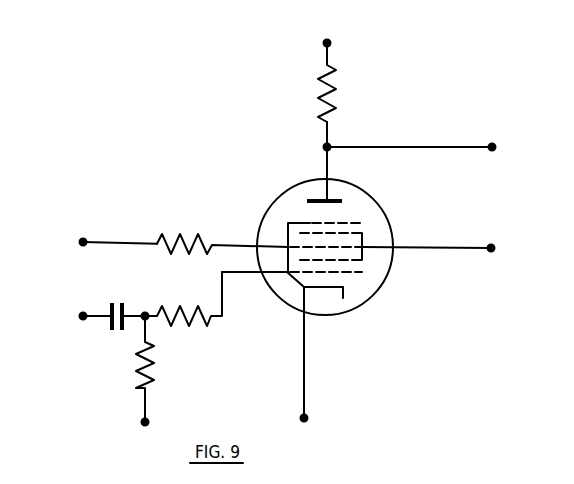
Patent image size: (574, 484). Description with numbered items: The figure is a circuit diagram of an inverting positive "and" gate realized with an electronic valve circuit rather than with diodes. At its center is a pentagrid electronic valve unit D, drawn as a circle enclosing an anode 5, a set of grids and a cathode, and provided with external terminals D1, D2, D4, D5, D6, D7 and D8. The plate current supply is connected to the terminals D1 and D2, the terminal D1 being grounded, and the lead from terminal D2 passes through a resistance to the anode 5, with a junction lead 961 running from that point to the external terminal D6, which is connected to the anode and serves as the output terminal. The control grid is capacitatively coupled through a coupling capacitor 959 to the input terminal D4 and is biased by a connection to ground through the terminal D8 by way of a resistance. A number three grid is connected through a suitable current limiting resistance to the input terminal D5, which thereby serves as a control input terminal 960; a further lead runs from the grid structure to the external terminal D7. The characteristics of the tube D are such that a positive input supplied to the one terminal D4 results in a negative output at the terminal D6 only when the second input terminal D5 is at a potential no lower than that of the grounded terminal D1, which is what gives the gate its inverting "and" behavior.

The pentagrid electronic valve unit D is at (296, 206).
The plate (anode) of tube 5 is at (325, 162).
The external terminal D1 is at (302, 417).
The external terminal D2 is at (326, 42).
The input terminal D4 is at (81, 315).
The input terminal D5 is at (82, 241).
The output terminal D6 is at (491, 145).
The external terminal D7 is at (491, 246).
The external terminal D8 is at (143, 420).
The coupling capacitor 959 is at (92, 315).
The control input terminal 960 is at (131, 242).
The output lead 961 is at (434, 148).